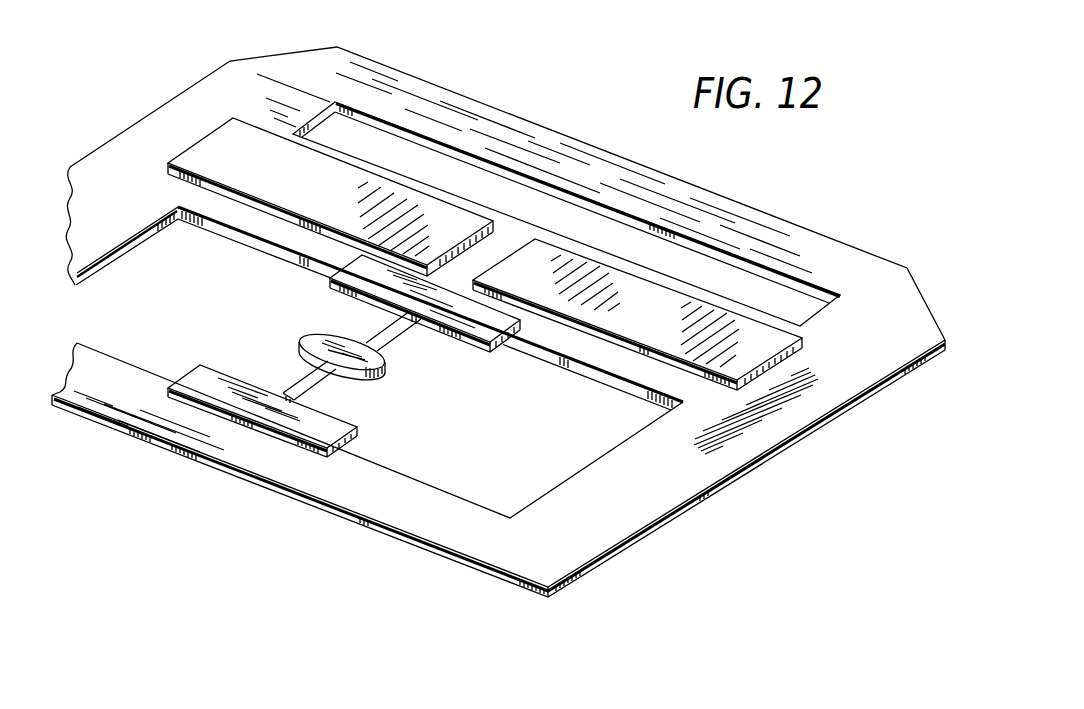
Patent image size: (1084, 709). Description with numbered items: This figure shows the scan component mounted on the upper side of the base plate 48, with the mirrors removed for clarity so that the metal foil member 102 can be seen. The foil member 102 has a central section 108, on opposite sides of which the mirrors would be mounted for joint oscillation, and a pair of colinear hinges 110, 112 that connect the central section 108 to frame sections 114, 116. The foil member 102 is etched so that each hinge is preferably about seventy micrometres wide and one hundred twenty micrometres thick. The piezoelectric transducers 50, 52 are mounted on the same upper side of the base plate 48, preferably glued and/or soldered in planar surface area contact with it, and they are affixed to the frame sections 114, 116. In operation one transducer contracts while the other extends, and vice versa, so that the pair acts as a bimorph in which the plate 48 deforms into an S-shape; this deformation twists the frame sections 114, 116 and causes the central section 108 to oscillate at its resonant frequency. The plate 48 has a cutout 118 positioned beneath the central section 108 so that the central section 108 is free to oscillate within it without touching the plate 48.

The base plate 48 is at (522, 524).
The piezoelectric transducer 50 is at (646, 327).
The piezoelectric transducer 52 is at (277, 190).
The foil member 102 is at (348, 377).
The central section 108 is at (314, 341).
The hinge 110 is at (393, 330).
The hinge 112 is at (322, 372).
The frame section 114 is at (492, 330).
The frame section 116 is at (316, 450).
The cutout 118 is at (110, 264).